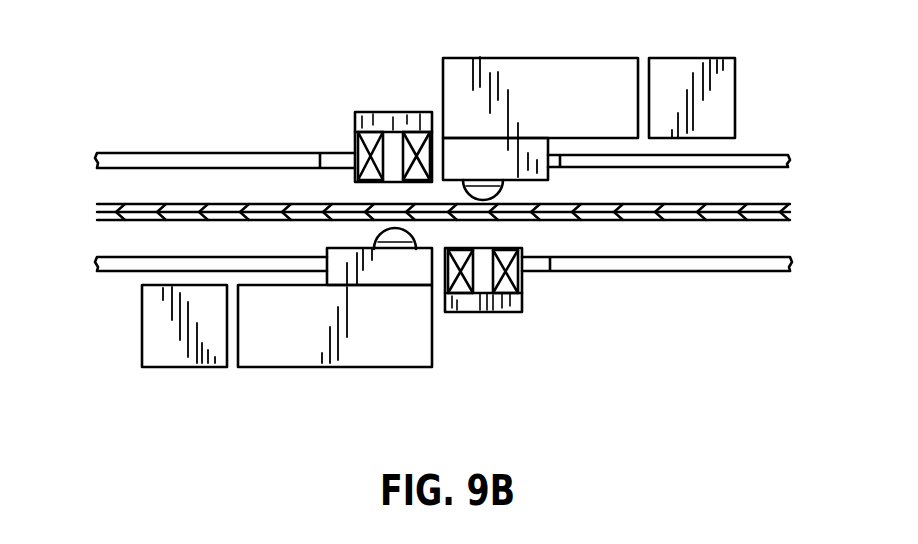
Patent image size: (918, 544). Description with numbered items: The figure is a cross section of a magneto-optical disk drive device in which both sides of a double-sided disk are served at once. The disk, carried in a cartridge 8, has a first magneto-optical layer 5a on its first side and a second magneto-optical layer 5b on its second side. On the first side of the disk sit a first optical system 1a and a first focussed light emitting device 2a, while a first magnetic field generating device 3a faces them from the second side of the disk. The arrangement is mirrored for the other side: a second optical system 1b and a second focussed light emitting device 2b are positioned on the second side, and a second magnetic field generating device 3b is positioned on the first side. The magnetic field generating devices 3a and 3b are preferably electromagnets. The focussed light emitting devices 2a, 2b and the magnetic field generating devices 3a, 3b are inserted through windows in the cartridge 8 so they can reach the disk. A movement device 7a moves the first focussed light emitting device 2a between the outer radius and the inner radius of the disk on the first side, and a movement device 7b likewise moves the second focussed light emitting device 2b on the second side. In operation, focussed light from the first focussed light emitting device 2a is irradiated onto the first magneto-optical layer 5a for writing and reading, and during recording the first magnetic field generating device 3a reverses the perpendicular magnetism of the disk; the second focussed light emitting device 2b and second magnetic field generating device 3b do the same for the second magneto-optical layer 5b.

The cartridge 8 is at (143, 153).
The first magnetic field generating device 3a is at (393, 143).
The second magnetic field generating device 3b is at (480, 284).
The first optical system 1a is at (387, 337).
The second optical system 1b is at (580, 86).
The movement device 7a is at (163, 367).
The movement device 7b is at (688, 58).
The first focussed light emitting device 2a is at (374, 233).
The second focussed light emitting device 2b is at (498, 190).
The first magneto-optical layer 5a is at (770, 272).
The second magneto-optical layer 5b is at (772, 156).